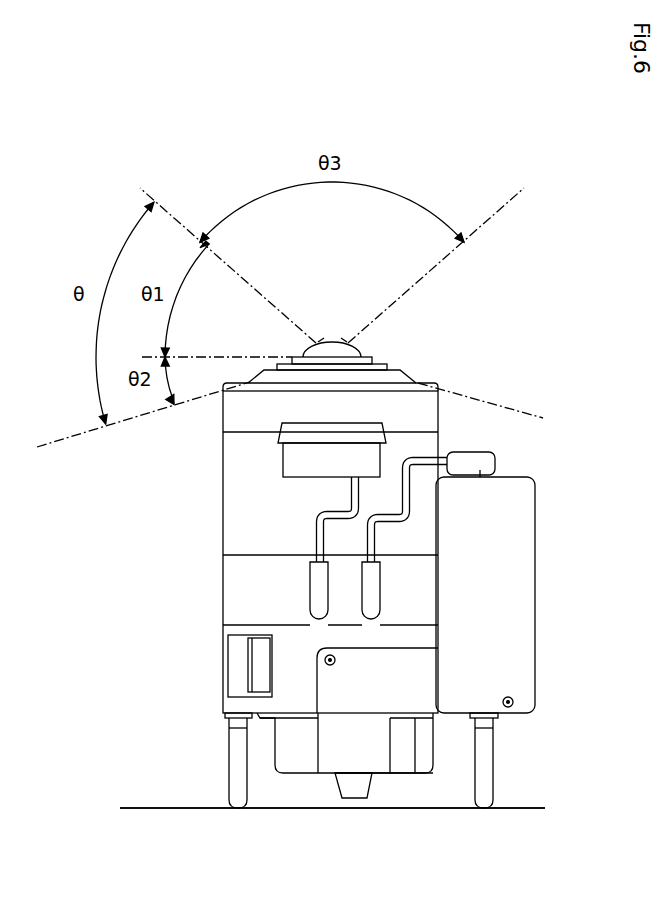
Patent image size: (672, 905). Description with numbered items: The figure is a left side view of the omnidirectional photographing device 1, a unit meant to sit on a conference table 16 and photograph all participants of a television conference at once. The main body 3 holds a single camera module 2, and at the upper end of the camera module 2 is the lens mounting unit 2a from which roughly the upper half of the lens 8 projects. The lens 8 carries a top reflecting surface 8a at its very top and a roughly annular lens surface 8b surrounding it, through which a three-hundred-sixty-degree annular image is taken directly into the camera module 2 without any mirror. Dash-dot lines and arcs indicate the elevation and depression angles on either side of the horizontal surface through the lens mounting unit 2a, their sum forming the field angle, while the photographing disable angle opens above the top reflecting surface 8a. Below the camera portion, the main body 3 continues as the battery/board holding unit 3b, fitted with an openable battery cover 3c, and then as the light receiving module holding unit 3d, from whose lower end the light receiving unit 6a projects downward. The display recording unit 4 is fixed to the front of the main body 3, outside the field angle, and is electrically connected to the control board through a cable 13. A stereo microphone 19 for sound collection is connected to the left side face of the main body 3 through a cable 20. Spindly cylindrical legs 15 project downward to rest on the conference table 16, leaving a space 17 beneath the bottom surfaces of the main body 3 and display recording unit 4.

The omnidirectional photographing device 1 is at (426, 171).
The camera module 2 is at (388, 369).
The lens mounting unit 2a is at (364, 353).
The main body 3 is at (237, 448).
The battery/board holding unit 3b is at (255, 593).
The battery cover 3c is at (235, 666).
The light receiving module holding unit 3d is at (298, 762).
The display recording unit 4 is at (522, 556).
The light receiving unit 6a is at (353, 792).
The lens 8 is at (360, 279).
The top reflecting surface 8a is at (349, 341).
The lens surface 8b is at (323, 341).
The cable 13 is at (426, 458).
The legs 15 is at (233, 766).
The conference table 16 is at (507, 860).
The space 17 is at (427, 796).
The stereo microphone 19 is at (292, 463).
The cable 20 is at (350, 500).